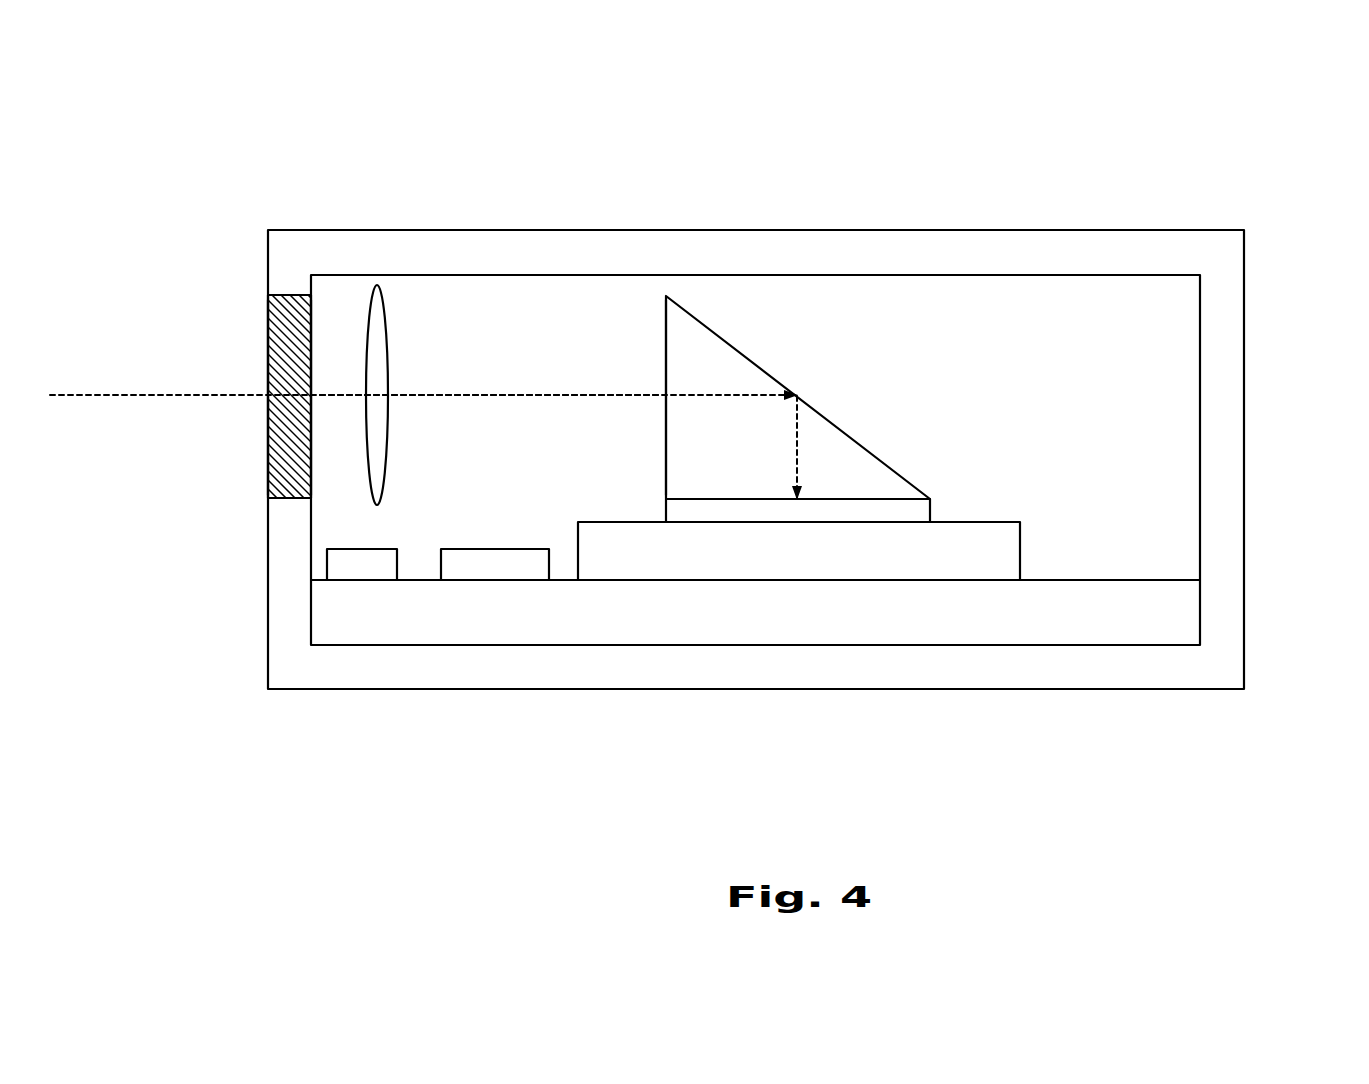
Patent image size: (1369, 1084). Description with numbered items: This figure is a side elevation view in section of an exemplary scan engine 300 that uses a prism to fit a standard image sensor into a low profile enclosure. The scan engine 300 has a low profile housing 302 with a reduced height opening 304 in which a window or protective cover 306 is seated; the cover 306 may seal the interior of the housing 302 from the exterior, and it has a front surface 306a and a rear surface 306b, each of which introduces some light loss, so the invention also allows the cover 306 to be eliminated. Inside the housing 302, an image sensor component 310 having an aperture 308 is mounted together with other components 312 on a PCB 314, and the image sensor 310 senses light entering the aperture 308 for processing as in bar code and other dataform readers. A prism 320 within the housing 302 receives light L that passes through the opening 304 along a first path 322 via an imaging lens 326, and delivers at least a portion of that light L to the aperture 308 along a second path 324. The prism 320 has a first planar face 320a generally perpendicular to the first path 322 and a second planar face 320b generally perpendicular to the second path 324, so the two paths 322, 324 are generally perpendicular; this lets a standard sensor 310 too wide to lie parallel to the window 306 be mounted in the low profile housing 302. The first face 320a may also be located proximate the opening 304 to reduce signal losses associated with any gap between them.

The scan engine 300 is at (1188, 128).
The housing 302 is at (1220, 539).
The opening 304 is at (230, 368).
The window or protective cover 306 is at (268, 315).
The front surface 306a is at (265, 483).
The rear surface 306b is at (312, 325).
The aperture 308 is at (935, 507).
The image sensor component 310 is at (977, 565).
The other components 312 is at (353, 569).
The PCB 314 is at (1177, 626).
The prism 320 is at (828, 415).
The first planar face 320a is at (665, 333).
The second planar face 320b is at (688, 498).
The first path 322 is at (635, 396).
The second path 324 is at (795, 435).
The imaging lens 326 is at (378, 330).
The light L is at (222, 397).